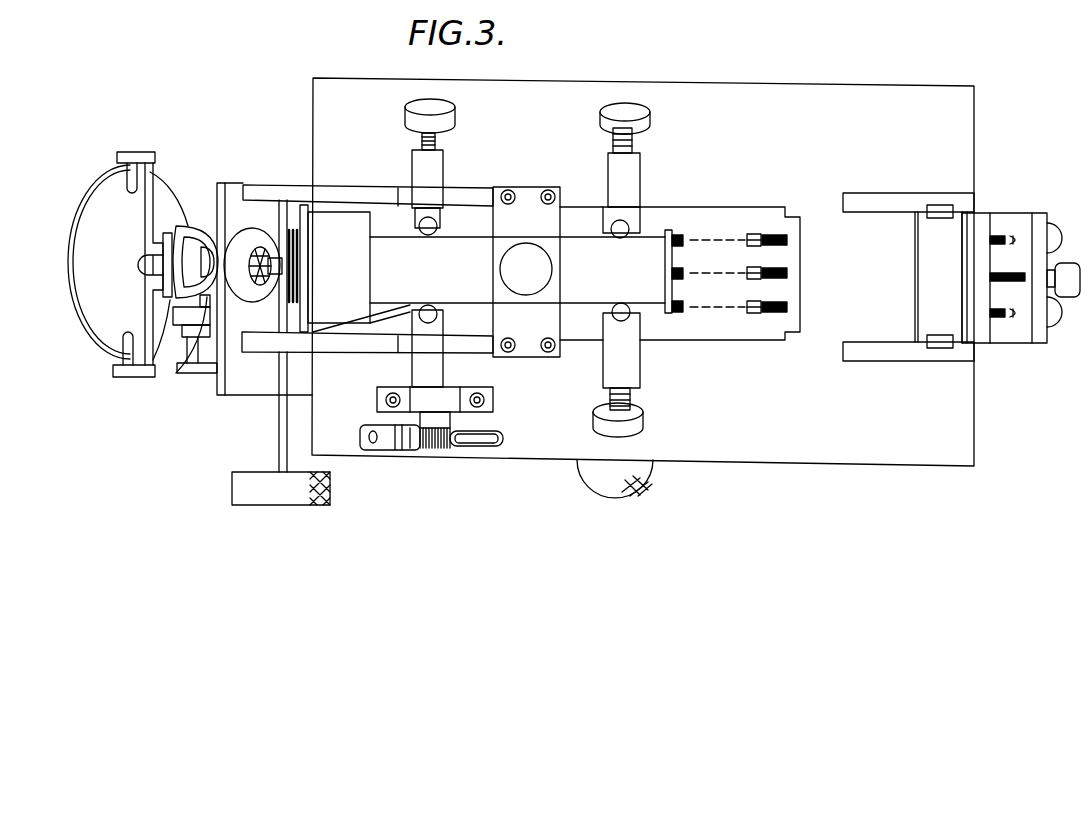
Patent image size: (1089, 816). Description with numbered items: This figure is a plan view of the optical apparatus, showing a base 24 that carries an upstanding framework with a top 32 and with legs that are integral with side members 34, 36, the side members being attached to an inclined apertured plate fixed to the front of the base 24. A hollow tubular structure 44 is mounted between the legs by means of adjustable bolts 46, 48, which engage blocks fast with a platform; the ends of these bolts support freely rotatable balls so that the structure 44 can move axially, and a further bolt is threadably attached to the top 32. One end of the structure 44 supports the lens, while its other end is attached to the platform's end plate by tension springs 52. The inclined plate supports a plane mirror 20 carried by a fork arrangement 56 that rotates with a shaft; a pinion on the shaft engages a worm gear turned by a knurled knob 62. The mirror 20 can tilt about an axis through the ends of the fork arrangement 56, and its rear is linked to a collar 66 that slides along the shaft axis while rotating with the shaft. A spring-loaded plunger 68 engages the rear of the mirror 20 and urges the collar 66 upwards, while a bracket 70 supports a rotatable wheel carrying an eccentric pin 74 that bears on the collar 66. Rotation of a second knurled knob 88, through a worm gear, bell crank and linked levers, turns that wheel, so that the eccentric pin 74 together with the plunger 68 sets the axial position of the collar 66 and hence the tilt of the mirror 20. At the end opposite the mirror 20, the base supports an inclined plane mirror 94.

The plane mirror 20 is at (98, 330).
The base 24 is at (569, 120).
The top 32 is at (540, 330).
The side member 34 is at (472, 346).
The side member 36 is at (383, 193).
The hollow tubular structure 44 is at (621, 278).
The adjustable bolt 46 is at (632, 143).
The adjustable bolt 48 is at (438, 137).
The tension springs 52 is at (684, 307).
The fork arrangement 56 is at (137, 375).
The knurled knob 62 is at (278, 495).
The collar 66 is at (197, 228).
The spring-loaded plunger 68 is at (145, 258).
The bracket 70 is at (185, 367).
The eccentric pin 74 is at (203, 300).
The knurled knob 88 is at (642, 487).
The inclined plane mirror 94 is at (262, 385).